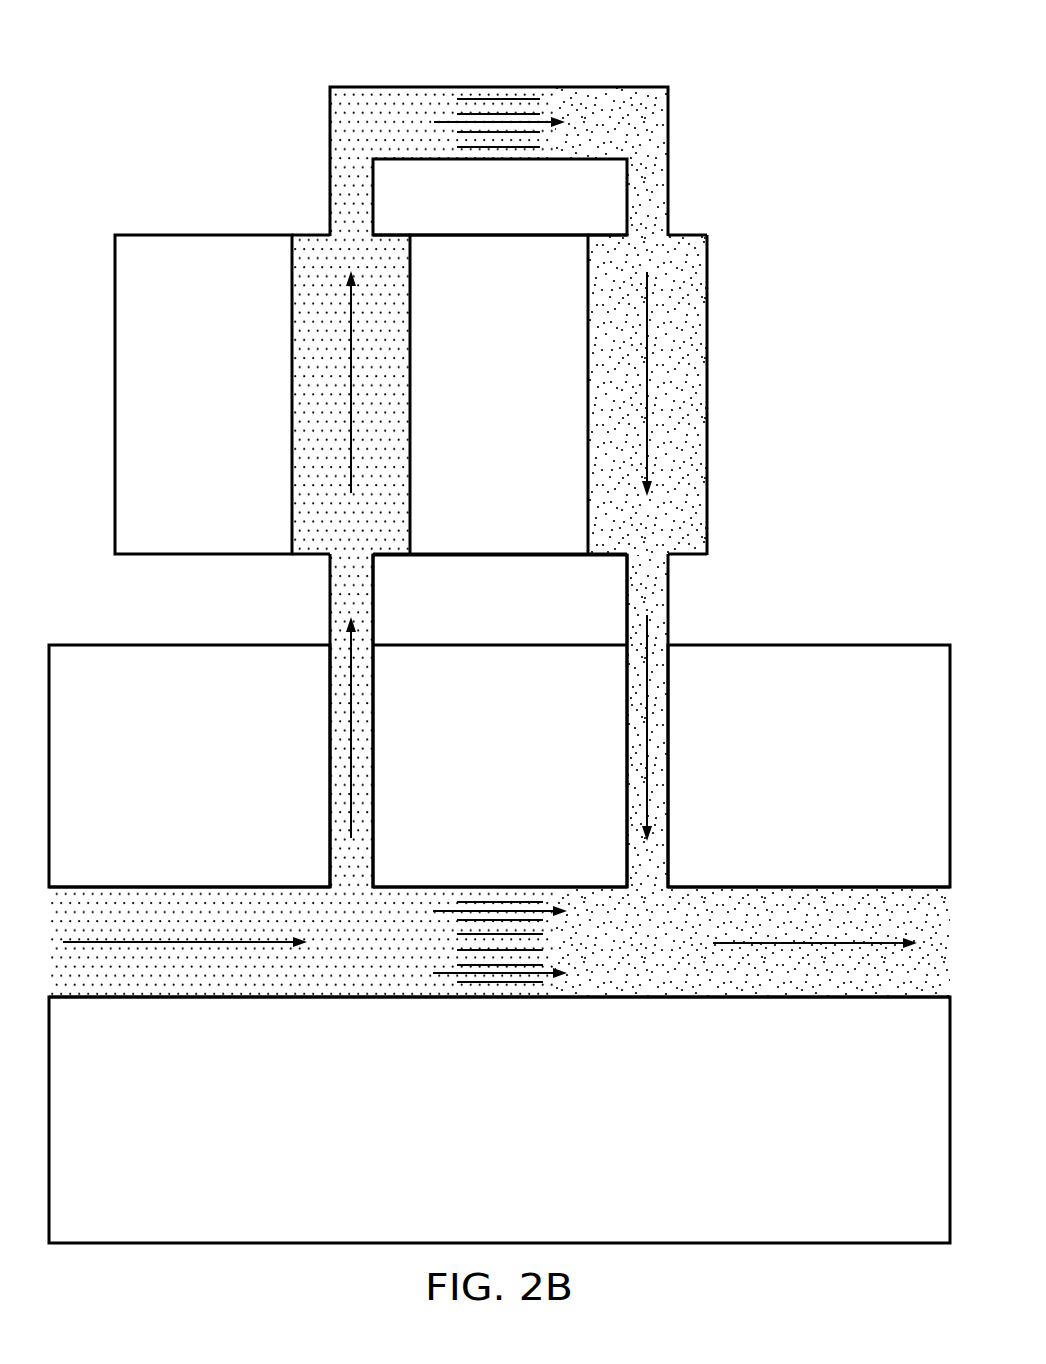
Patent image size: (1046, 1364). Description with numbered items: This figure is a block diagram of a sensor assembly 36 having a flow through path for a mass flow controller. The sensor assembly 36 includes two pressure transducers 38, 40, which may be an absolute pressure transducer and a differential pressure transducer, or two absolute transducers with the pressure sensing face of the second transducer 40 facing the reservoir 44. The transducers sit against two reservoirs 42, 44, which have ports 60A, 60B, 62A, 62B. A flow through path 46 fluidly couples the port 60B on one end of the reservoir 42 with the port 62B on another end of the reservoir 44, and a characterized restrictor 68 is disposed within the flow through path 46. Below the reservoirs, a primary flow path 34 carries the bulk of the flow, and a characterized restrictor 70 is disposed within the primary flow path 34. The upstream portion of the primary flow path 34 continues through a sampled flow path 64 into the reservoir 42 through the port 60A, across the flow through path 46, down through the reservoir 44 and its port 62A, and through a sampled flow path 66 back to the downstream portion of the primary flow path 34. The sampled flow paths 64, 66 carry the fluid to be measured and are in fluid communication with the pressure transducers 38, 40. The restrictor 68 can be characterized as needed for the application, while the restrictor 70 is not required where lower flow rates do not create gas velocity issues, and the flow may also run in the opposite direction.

The primary flow path 34 is at (217, 897).
The sensor assembly 36 is at (120, 64).
The pressure transducer 38 is at (163, 233).
The pressure transducer 40 is at (500, 556).
The reservoir 42 is at (413, 302).
The reservoir 44 is at (710, 303).
The flow through path 46 is at (362, 87).
The port 60A is at (326, 557).
The port 60B is at (327, 231).
The port 62A is at (673, 557).
The port 62B is at (672, 228).
The sampled flow path 64 is at (330, 757).
The sampled flow path 66 is at (667, 758).
The characterized restrictor 68 is at (580, 100).
The characterized restrictor 70 is at (578, 968).